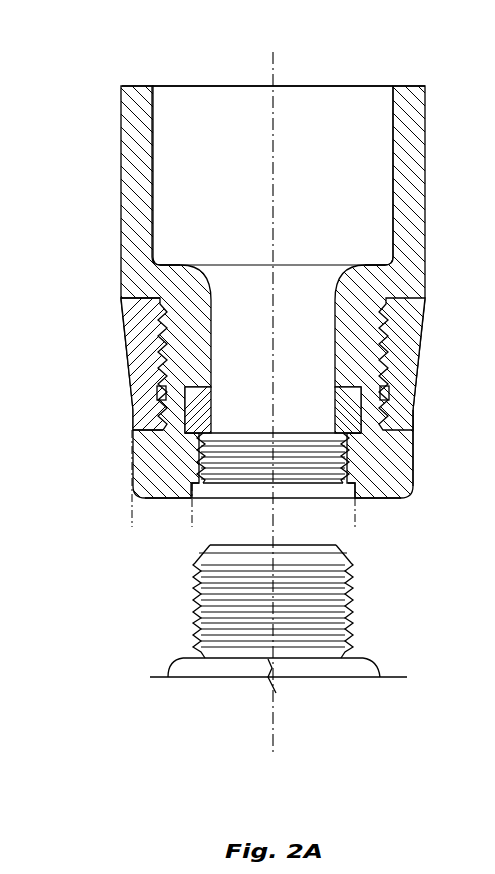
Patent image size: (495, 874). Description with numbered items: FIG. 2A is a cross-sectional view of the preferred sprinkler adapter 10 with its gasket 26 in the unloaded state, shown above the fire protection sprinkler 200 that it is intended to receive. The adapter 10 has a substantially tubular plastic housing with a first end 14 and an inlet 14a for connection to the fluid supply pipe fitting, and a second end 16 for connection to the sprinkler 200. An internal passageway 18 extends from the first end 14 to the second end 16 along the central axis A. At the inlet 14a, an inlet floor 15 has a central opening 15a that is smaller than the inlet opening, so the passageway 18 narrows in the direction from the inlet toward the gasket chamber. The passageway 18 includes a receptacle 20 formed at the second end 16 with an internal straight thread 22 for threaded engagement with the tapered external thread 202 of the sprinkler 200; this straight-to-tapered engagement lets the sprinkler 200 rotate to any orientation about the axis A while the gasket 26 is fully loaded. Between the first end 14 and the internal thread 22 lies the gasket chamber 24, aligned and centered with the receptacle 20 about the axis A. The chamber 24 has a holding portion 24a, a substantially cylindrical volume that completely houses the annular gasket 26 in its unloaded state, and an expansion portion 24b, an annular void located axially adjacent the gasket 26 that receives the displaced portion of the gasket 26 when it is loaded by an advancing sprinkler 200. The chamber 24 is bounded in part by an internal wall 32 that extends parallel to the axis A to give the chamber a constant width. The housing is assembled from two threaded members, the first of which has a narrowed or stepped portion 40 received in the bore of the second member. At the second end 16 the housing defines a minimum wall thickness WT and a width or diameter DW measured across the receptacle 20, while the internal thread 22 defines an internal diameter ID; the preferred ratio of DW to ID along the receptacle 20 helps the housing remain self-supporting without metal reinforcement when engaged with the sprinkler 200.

The sprinkler adapter 10 is at (78, 112).
The first end 14 is at (410, 85).
The inlet 14a is at (345, 80).
The inlet floor 15 is at (168, 264).
The central opening 15a is at (252, 248).
The internal passageway 18 is at (341, 203).
The gasket chamber 24 is at (152, 384).
The holding portion 24a is at (116, 449).
The expansion portion 24b is at (140, 363).
The narrowed or stepped portion 40 is at (400, 352).
The internal wall 32 is at (395, 393).
The gasket 26 is at (380, 428).
The internal thread 22 is at (348, 455).
The second end 16 is at (404, 496).
The receptacle 20 is at (359, 501).
The external thread 202 is at (355, 580).
The fire protection sprinkler 200 is at (366, 668).
The central axis A is at (282, 401).
The minimum width or diameter DW is at (414, 437).
The wall thickness WT is at (100, 516).
The internal diameter ID is at (193, 516).